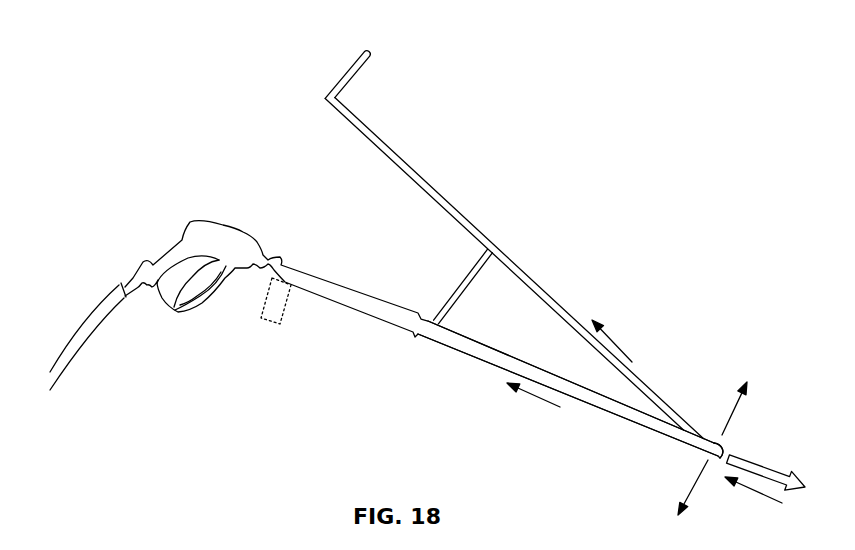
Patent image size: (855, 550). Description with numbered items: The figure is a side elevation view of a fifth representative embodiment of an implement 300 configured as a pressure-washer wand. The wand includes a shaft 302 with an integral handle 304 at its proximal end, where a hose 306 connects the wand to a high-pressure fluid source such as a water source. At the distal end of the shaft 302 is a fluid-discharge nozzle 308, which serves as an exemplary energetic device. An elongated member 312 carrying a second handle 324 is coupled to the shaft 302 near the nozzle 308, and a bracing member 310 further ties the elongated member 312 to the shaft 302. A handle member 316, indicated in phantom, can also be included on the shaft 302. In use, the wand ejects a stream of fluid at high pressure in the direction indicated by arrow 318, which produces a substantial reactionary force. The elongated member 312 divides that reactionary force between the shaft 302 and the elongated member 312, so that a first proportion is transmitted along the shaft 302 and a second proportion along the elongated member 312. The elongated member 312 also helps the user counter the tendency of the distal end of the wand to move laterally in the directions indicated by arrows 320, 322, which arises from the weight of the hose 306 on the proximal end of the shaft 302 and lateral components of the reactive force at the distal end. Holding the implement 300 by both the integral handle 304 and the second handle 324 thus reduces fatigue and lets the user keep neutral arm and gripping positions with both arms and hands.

The implement 300 is at (114, 38).
The shaft 302 is at (459, 349).
The integral handle 304 is at (164, 254).
The hose 306 is at (82, 322).
The fluid-discharge nozzle 308 is at (719, 444).
The bracing member 310 is at (464, 283).
The elongated member 312 is at (449, 212).
The handle member 316 is at (279, 322).
The arrow 318 is at (765, 466).
The arrow 320 is at (692, 486).
The arrow 322 is at (734, 414).
The second handle 324 is at (368, 51).